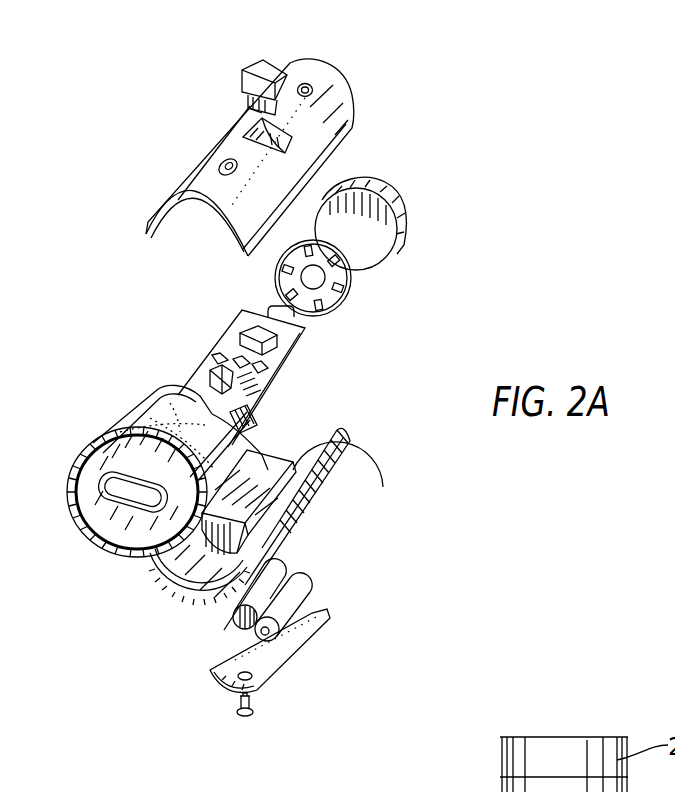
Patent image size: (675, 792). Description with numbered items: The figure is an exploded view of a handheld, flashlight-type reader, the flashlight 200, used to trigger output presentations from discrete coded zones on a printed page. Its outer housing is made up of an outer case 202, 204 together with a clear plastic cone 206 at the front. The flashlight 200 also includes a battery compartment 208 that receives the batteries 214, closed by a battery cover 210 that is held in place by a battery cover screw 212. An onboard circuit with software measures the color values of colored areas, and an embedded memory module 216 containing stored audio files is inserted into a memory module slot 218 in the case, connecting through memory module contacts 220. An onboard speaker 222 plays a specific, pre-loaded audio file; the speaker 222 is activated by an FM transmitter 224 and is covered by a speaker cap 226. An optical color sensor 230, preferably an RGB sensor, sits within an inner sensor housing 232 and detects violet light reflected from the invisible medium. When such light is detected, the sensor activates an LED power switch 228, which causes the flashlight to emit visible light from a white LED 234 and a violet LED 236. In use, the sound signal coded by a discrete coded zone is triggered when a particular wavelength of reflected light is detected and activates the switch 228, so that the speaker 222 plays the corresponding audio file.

The flashlight 200 is at (392, 113).
The outer case 202 is at (274, 208).
The outer case 204 is at (352, 458).
The clear plastic cone 206 is at (113, 540).
The battery compartment 208 is at (268, 456).
The battery cover 210 is at (318, 628).
The battery cover screw 212 is at (238, 712).
The batteries 214 is at (288, 578).
The embedded memory module 216 is at (265, 64).
The memory module slot 218 is at (253, 127).
The memory module contacts 220 is at (301, 333).
The onboard speaker 222 is at (351, 288).
The FM transmitter 224 is at (266, 364).
The speaker cap 226 is at (392, 188).
The LED power switch 228 is at (222, 170).
The optical color sensor 230 is at (172, 400).
The inner sensor housing 232 is at (79, 480).
The white LED 234 is at (178, 425).
The violet LED 236 is at (253, 405).